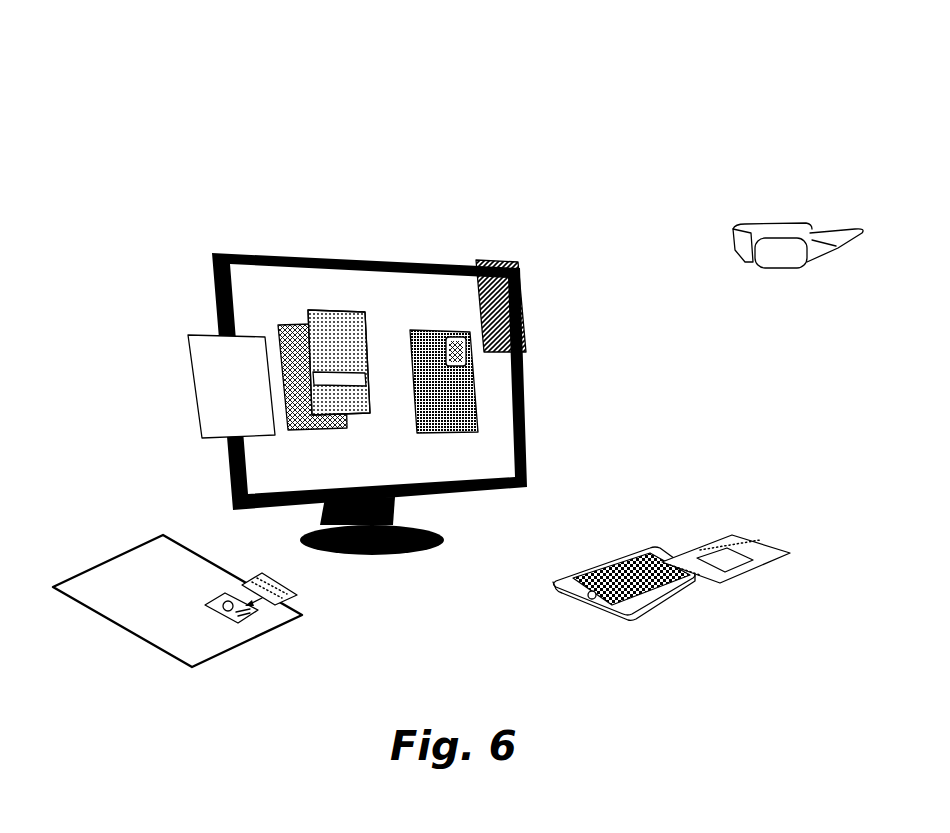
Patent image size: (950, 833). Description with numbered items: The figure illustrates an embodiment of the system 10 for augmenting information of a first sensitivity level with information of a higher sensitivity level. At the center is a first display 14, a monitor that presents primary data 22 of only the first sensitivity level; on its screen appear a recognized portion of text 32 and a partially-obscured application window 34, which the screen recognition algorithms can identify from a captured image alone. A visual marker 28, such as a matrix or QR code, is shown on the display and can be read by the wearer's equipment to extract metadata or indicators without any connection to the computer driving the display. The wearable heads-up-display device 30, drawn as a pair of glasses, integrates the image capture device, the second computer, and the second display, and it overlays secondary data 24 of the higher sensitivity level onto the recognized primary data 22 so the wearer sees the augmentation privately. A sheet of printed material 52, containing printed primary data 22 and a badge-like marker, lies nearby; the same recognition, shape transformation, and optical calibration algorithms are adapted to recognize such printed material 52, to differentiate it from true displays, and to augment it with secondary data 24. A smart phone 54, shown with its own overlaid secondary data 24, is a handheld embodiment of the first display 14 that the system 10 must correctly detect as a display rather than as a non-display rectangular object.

The system 10 is at (156, 53).
The first display 14 is at (495, 455).
The primary data 22 is at (333, 340).
The secondary data 24 is at (215, 373).
The visual marker 28 is at (468, 355).
The heads-up-display device 30 is at (770, 253).
The portion of text 32 is at (330, 375).
The partially-obscured application window 34 is at (295, 367).
The printed material 52 is at (140, 633).
The smart phone 54 is at (612, 617).